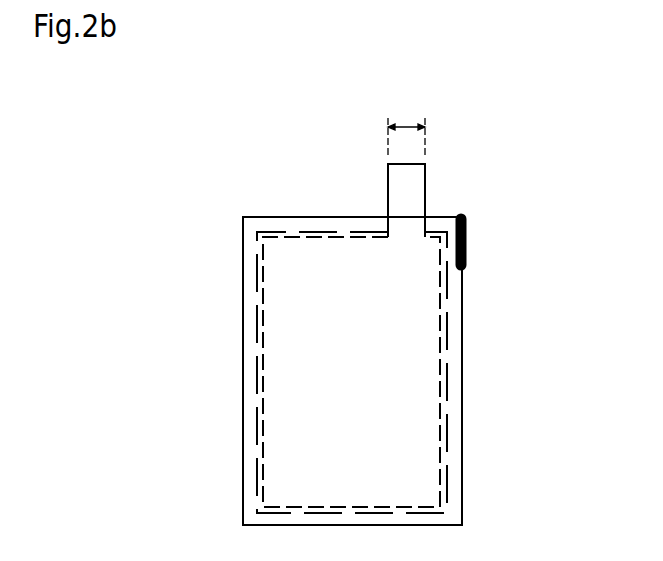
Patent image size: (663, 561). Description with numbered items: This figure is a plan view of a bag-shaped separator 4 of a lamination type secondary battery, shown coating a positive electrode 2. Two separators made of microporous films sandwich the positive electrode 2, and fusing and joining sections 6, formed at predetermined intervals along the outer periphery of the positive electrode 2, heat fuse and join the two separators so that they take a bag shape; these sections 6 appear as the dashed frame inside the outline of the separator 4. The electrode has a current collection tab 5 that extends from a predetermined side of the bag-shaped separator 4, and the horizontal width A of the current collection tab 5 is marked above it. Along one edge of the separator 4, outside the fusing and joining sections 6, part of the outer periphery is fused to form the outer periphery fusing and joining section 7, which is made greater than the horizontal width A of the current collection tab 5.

The positive electrode 2 is at (300, 347).
The bag-shaped separator 4 is at (280, 217).
The current collection tab 5 is at (415, 193).
The fusing and joining section 6 is at (447, 407).
The outer periphery fusing and joining section 7 is at (467, 243).
The horizontal width of current collection tab A is at (406, 119).